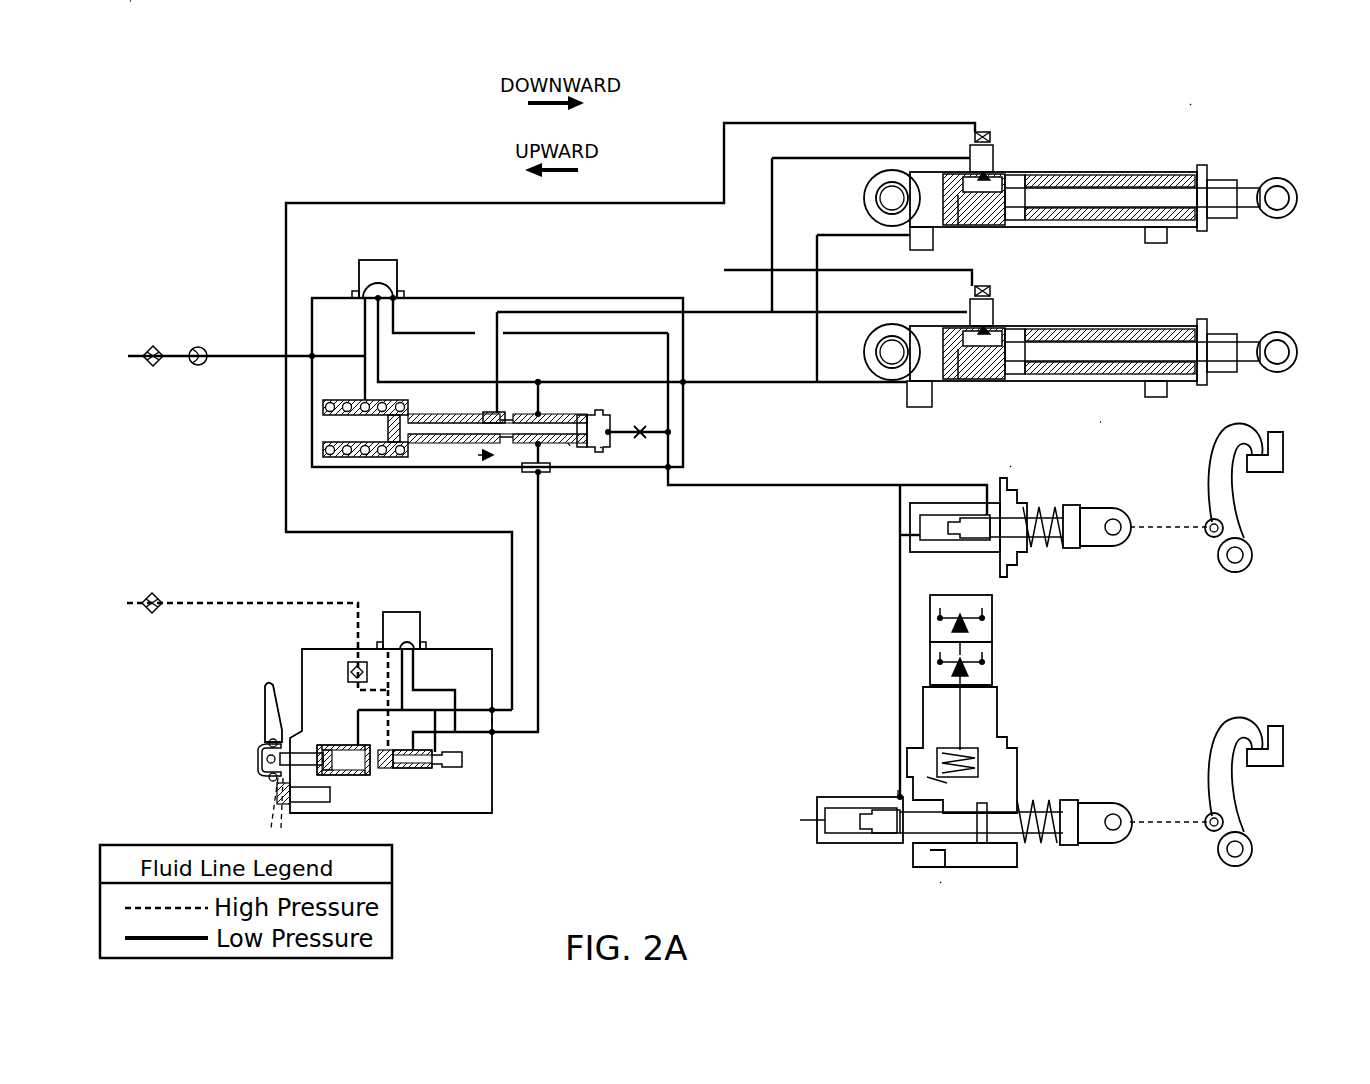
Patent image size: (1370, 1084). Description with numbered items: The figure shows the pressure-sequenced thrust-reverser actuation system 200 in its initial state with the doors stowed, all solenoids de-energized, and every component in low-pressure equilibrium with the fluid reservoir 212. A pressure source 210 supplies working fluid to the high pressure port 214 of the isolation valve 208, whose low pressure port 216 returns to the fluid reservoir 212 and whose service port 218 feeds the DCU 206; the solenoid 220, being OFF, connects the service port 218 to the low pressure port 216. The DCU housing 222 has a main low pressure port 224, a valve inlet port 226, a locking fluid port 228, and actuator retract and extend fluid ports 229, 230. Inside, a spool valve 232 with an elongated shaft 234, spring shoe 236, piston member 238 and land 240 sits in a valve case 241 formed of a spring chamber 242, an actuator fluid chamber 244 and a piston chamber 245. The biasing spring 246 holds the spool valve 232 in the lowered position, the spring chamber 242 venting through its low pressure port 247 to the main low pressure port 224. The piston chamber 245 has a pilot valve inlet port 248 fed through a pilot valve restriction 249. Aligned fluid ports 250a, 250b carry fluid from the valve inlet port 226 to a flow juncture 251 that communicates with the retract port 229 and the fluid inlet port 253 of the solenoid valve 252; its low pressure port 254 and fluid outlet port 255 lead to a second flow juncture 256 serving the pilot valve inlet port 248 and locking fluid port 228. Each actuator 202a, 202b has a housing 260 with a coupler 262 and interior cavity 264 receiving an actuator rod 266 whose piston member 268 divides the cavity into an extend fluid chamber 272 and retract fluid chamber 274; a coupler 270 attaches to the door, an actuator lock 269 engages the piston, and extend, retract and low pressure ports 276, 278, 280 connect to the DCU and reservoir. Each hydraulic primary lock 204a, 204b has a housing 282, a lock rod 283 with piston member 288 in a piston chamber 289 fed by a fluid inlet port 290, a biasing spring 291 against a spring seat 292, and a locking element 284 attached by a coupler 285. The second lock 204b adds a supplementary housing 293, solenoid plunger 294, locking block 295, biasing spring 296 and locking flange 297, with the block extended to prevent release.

The actuation system 200 is at (392, 124).
The first actuator 202a is at (1190, 103).
The second actuator 202b is at (1102, 422).
The first hydraulic primary lock 204a is at (1010, 464).
The second hydraulic primary lock 204b is at (939, 882).
The DCU 206 is at (603, 548).
The isolation valve 208 is at (432, 826).
The pressure source 210 is at (152, 614).
The fluid reservoir 212 is at (157, 366).
The high pressure port 214 is at (345, 652).
The low pressure port 216 is at (495, 700).
The service port 218 is at (494, 735).
The solenoid 220 is at (412, 612).
The housing 222 is at (684, 457).
The main low pressure port 224 is at (314, 356).
The valve inlet port 226 is at (543, 472).
The locking fluid port 228 is at (668, 478).
The actuator retract fluid port 229 is at (684, 382).
The actuator extend fluid port 230 is at (684, 312).
The spool valve 232 is at (420, 458).
The elongated shaft 234 is at (465, 426).
The spring shoe 236 is at (358, 457).
The piston member 238 is at (603, 448).
The land 240 is at (503, 438).
The valve case 241 is at (580, 420).
The spring chamber 242 is at (325, 460).
The actuator fluid chamber 244 is at (486, 412).
The piston chamber 245 is at (568, 446).
The biasing spring 246 is at (338, 400).
The low pressure port 247 is at (380, 398).
The pilot valve inlet port 248 is at (605, 440).
The pilot valve restriction 249 is at (646, 430).
The aligned fluid port 250a is at (537, 490).
The aligned fluid port 250b is at (538, 418).
The flow juncture 251 is at (538, 380).
The solenoid valve 252 is at (406, 250).
The fluid inlet port 253 is at (378, 296).
The low pressure port 254 is at (355, 292).
The fluid outlet port 255 is at (400, 292).
The flow juncture 256 is at (668, 434).
The housing 260 is at (1110, 172).
The coupler 262 is at (866, 186).
The interior cavity 264 is at (1050, 178).
The actuator rod 266 is at (1180, 196).
The piston member 268 is at (1015, 178).
The actuator lock 269 is at (962, 328).
The coupler 270 is at (1288, 182).
The extend fluid chamber 272 is at (958, 172).
The retract fluid chamber 274 is at (1197, 228).
The extend fluid port 276 is at (992, 140).
The retract fluid port 278 is at (1157, 245).
The low pressure port 280 is at (984, 132).
The housing 282 is at (948, 553).
The lock rod 283 is at (1018, 498).
The locking element 284 is at (1242, 520).
The coupler 285 is at (1208, 522).
The piston member 288 is at (960, 487).
The piston chamber 289 is at (915, 535).
The fluid inlet port 290 is at (967, 528).
The biasing spring 291 is at (1043, 548).
The spring seat 292 is at (1120, 560).
The supplementary housing 293 is at (1018, 768).
The solenoid plunger 294 is at (1020, 660).
The locking block 295 is at (932, 775).
The biasing spring 296 is at (975, 755).
The locking flange 297 is at (996, 866).